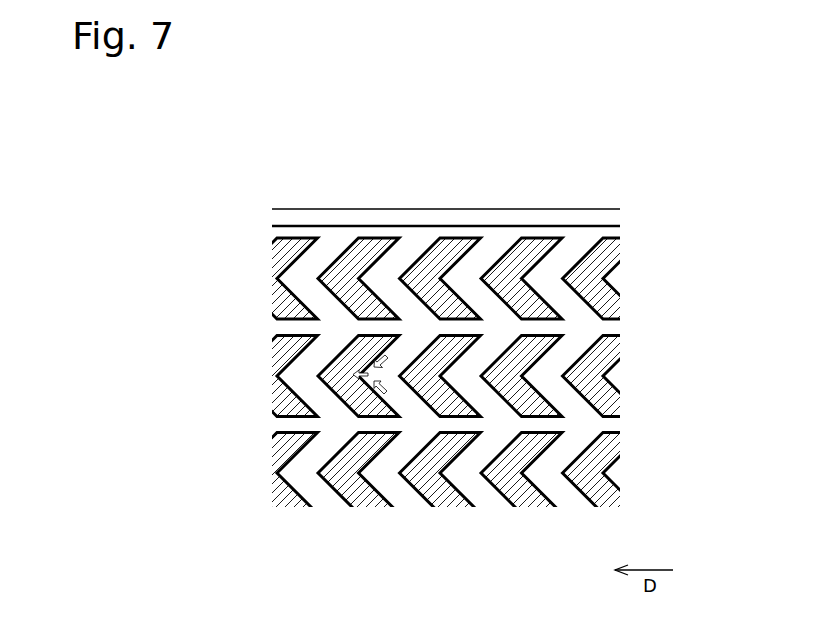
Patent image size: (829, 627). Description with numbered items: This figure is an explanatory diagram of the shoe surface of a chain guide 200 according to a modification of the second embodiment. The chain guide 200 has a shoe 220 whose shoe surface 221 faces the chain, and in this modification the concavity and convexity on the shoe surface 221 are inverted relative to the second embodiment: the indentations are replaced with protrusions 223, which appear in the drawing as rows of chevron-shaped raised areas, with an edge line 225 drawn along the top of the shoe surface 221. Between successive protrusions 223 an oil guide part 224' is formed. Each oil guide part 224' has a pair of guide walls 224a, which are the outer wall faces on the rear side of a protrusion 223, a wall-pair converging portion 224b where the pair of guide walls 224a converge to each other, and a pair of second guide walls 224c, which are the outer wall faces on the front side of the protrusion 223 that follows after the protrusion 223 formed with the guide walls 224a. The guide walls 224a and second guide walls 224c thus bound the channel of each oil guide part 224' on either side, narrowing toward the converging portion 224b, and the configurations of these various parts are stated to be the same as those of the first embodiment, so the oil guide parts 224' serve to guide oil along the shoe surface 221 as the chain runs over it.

The chain guide 200 is at (667, 260).
The shoe 220 is at (143, 178).
The shoe surface 221 is at (472, 350).
The protrusion 223 is at (558, 343).
The guide wall 224a is at (458, 345).
The wall-pair converging portion 224b is at (438, 363).
The second guide wall 224c is at (507, 345).
The oil guide part 224' is at (633, 167).
The edge line of belt surface 225 is at (336, 218).